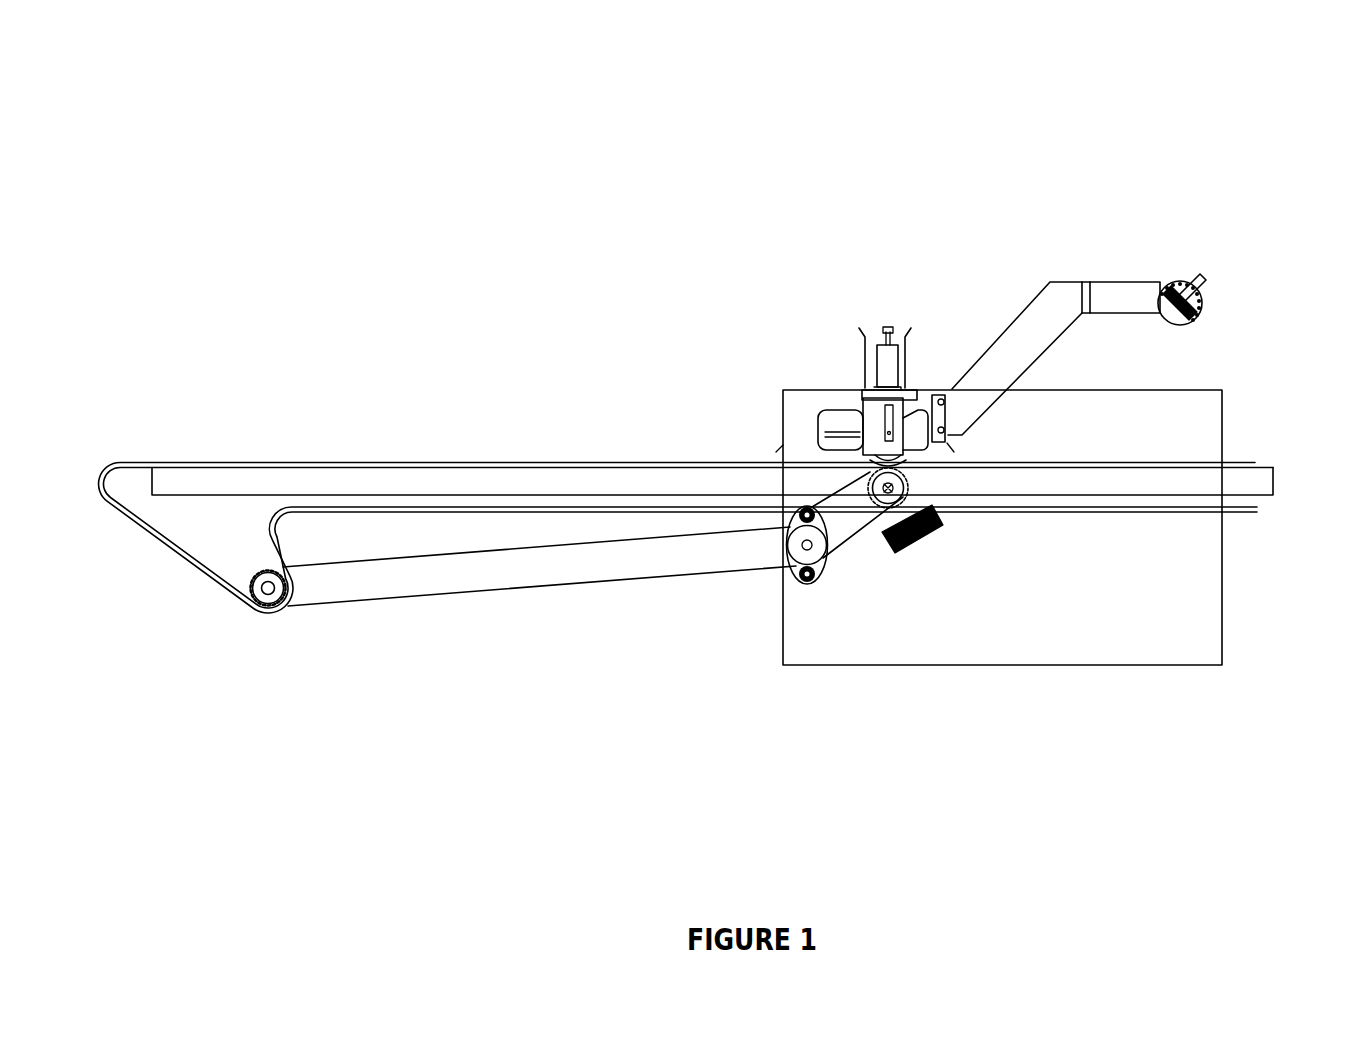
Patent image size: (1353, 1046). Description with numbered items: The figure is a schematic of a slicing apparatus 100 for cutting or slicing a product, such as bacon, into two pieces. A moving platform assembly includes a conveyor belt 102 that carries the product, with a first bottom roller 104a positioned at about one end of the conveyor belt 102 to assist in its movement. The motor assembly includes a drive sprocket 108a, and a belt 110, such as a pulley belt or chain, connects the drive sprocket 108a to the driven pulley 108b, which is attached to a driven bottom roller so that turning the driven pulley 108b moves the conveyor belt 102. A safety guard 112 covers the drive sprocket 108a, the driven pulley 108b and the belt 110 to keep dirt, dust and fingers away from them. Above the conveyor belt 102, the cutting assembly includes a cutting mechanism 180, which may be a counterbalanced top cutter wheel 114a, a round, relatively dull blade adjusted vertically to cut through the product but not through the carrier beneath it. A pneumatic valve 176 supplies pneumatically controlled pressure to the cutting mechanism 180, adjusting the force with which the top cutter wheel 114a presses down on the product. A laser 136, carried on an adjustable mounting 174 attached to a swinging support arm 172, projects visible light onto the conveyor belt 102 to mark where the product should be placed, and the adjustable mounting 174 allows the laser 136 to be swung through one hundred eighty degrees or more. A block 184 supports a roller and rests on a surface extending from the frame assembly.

The slicing apparatus 100 is at (160, 65).
The conveyor belt 102 is at (200, 463).
The first bottom roller 104a is at (280, 610).
The drive sprocket 108a is at (792, 563).
The driven pulley 108b is at (887, 505).
The belt 110 is at (602, 582).
The safety guard 112 is at (1050, 665).
The counterbalanced top cutter wheel 114a is at (905, 462).
The laser 136 is at (1212, 303).
The swinging support arm 172 is at (1080, 280).
The adjustable mounting 174 is at (1205, 275).
The pneumatic valve 176 is at (883, 360).
The cutting mechanism 180 is at (870, 423).
The block 184 is at (908, 550).